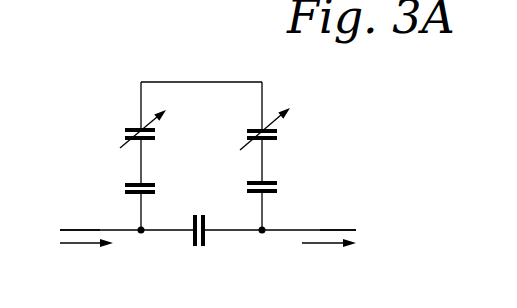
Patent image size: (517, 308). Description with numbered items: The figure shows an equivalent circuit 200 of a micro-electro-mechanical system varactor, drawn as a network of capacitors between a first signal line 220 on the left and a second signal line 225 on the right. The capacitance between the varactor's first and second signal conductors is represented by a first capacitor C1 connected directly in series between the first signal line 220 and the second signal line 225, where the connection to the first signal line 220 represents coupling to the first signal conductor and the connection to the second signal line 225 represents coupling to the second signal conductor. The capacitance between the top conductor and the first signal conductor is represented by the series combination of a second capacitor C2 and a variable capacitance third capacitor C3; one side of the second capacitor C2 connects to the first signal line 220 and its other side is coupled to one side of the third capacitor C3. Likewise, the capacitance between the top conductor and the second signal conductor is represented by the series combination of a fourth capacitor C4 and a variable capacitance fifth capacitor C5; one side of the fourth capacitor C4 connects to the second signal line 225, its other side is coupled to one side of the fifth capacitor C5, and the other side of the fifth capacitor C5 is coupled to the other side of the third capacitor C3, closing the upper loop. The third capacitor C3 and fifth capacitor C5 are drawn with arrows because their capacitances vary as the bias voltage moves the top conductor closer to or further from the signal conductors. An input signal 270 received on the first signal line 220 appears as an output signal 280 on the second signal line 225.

The equivalent circuit 200 is at (343, 95).
The first signal line 220 is at (95, 230).
The second signal line 225 is at (310, 230).
The input signal 270 is at (80, 243).
The output signal 280 is at (320, 243).
The first capacitor C1 is at (199, 213).
The second capacitor C2 is at (125, 185).
The third capacitor C3 is at (125, 131).
The fourth capacitor C4 is at (278, 185).
The fifth capacitor C5 is at (277, 137).